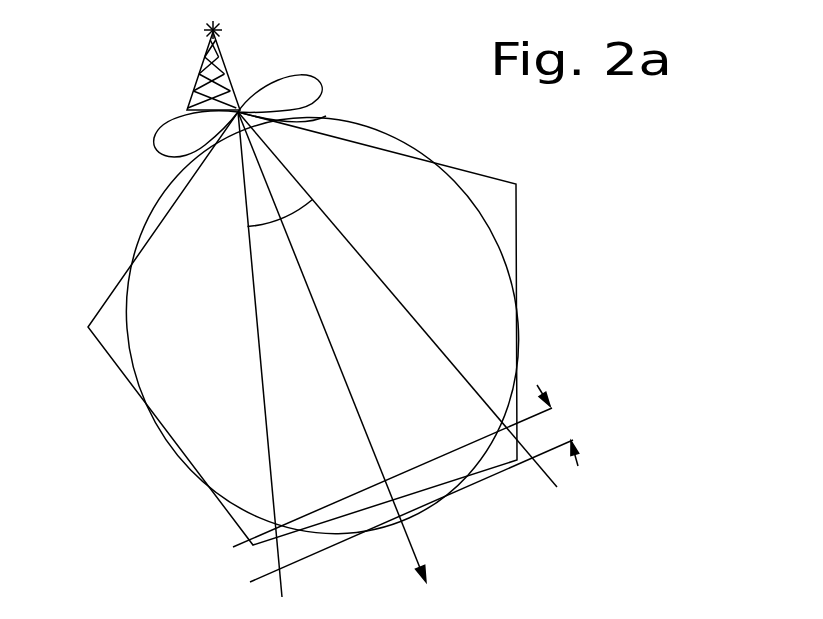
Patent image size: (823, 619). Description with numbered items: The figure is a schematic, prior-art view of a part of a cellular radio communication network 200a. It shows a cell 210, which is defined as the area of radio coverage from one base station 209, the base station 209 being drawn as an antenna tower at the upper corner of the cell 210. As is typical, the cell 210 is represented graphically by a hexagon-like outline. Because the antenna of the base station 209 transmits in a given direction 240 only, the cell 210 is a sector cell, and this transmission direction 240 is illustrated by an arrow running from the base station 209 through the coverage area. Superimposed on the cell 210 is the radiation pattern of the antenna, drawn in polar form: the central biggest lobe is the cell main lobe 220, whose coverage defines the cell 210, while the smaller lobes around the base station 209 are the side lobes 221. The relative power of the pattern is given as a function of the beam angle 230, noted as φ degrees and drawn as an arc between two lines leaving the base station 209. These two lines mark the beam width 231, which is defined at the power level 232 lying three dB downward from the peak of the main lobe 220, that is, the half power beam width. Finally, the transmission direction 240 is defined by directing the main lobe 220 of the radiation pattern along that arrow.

The cellular radio communication network 200a is at (665, 131).
The base station 209 is at (266, 22).
The cell 210 is at (458, 167).
The cell main lobe 220 is at (523, 307).
The side lobes 221 is at (207, 148).
The beam angle 230 is at (300, 209).
The beam width 231 is at (262, 408).
The power level 232 is at (578, 466).
The transmission direction 240 is at (413, 547).